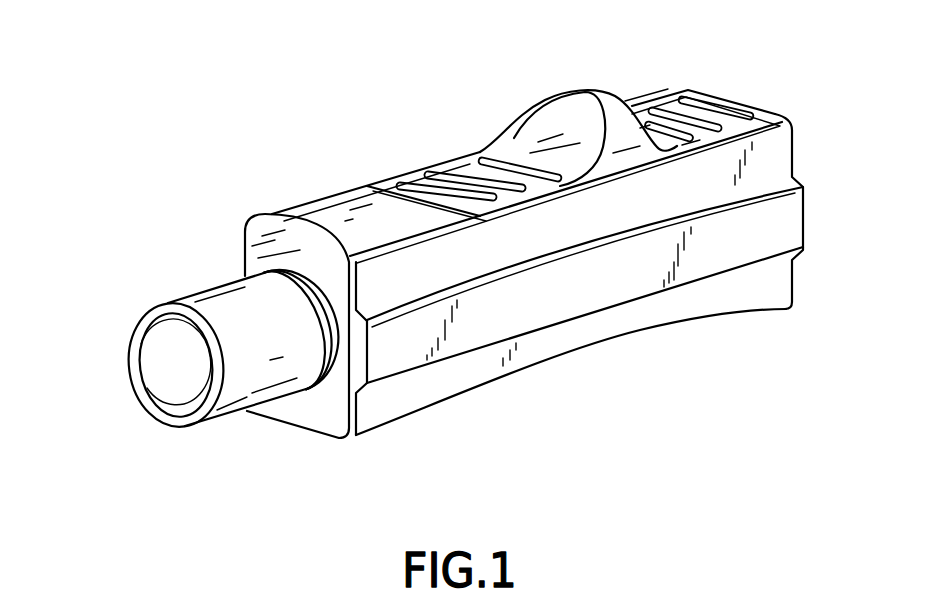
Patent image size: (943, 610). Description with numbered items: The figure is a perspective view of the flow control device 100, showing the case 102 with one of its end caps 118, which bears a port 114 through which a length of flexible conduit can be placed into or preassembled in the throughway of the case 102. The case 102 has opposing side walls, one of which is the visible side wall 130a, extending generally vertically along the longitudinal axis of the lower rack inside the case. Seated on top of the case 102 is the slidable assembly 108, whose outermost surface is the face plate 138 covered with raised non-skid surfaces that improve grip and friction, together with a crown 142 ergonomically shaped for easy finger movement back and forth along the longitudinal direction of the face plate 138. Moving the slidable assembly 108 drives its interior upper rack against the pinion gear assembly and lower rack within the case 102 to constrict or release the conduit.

The flow control device 100 is at (450, 264).
The case 102 is at (575, 348).
The slidable assembly 108 is at (615, 88).
The port 114 is at (147, 376).
The end cap 118 is at (322, 423).
The side wall 130a is at (778, 282).
The face plate 138 is at (455, 178).
The crown 142 is at (562, 100).